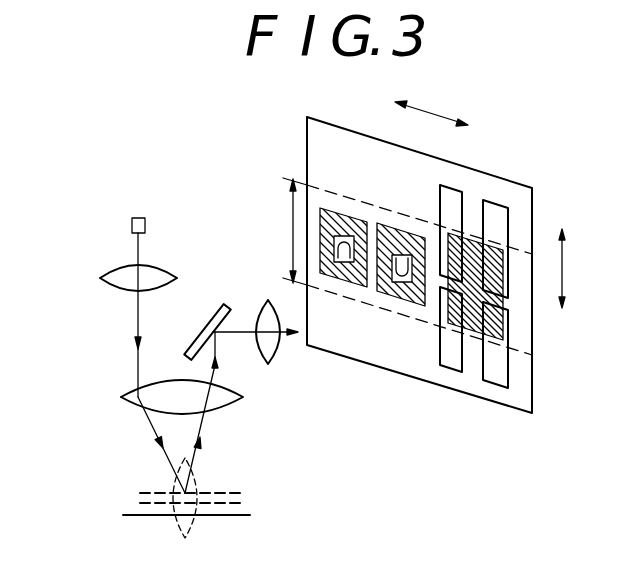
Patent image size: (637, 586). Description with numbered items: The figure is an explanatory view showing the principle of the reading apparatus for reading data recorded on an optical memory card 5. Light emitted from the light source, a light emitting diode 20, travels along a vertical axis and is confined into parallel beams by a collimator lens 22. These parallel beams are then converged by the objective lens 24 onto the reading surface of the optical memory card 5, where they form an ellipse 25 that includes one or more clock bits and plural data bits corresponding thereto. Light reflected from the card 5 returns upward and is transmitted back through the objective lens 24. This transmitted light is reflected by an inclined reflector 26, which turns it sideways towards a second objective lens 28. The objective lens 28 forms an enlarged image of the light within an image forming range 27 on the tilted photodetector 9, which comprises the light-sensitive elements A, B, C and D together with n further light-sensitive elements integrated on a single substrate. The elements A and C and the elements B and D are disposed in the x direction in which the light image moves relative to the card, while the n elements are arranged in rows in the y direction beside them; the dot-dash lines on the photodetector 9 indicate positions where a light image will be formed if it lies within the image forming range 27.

The optical memory card 5 is at (230, 517).
The photodetector 9 is at (355, 132).
The light emitting diode 20 is at (138, 218).
The collimator lens 22 is at (101, 289).
The objective lens 24 is at (122, 398).
The ellipse 25 is at (182, 527).
The reflector 26 is at (209, 320).
The image forming range 27 is at (293, 232).
The objective lens 28 is at (277, 350).